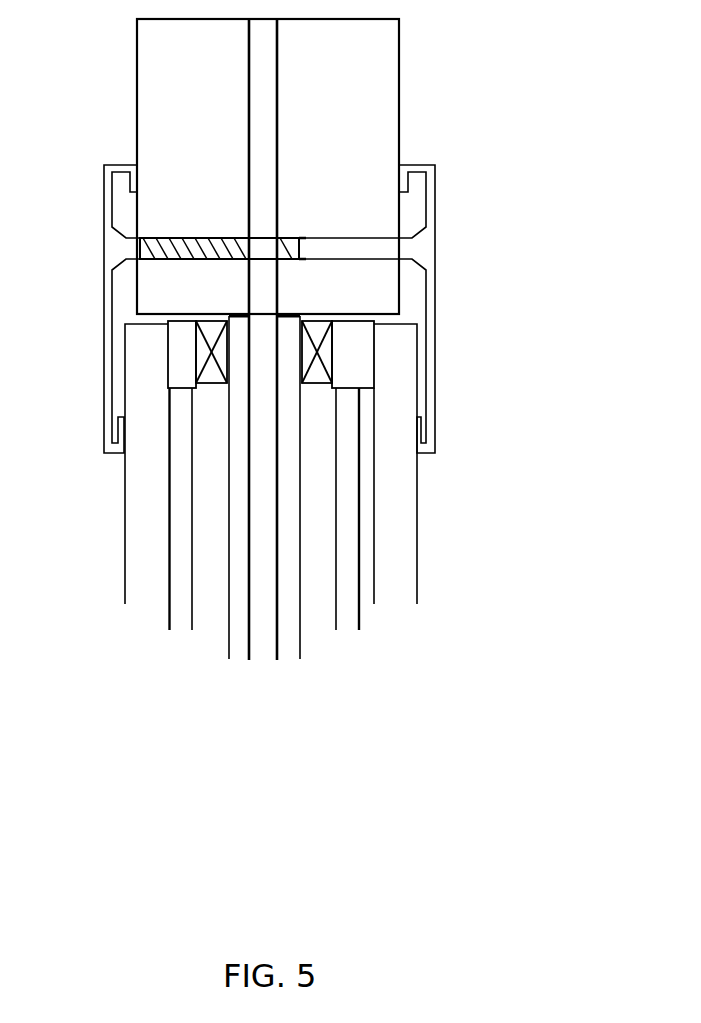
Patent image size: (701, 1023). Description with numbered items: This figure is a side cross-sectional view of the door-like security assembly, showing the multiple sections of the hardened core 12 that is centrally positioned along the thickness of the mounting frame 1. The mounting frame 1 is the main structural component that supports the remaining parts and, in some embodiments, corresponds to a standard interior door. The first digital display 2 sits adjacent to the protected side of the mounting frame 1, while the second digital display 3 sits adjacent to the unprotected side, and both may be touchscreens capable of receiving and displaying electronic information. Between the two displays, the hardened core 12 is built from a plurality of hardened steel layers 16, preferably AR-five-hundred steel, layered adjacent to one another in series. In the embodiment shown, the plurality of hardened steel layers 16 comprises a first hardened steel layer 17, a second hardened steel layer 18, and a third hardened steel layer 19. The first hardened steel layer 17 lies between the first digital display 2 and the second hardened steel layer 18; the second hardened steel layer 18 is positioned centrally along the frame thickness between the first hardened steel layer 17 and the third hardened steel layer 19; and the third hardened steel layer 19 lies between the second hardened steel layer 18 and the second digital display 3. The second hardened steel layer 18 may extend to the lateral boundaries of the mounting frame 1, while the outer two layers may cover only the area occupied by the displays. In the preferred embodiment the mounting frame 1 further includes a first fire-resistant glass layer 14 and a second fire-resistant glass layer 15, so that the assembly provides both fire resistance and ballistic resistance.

The mounting frame 1 is at (473, 142).
The first digital display 2 is at (345, 568).
The second digital display 3 is at (201, 577).
The hardened core 12 is at (293, 698).
The first fire-resistant glass layer 14 is at (402, 492).
The second fire-resistant glass layer 15 is at (145, 491).
The plurality of hardened steel layers 16 is at (222, 633).
The first hardened steel layer 17 is at (295, 642).
The second hardened steel layer 18 is at (262, 645).
The third hardened steel layer 19 is at (242, 653).